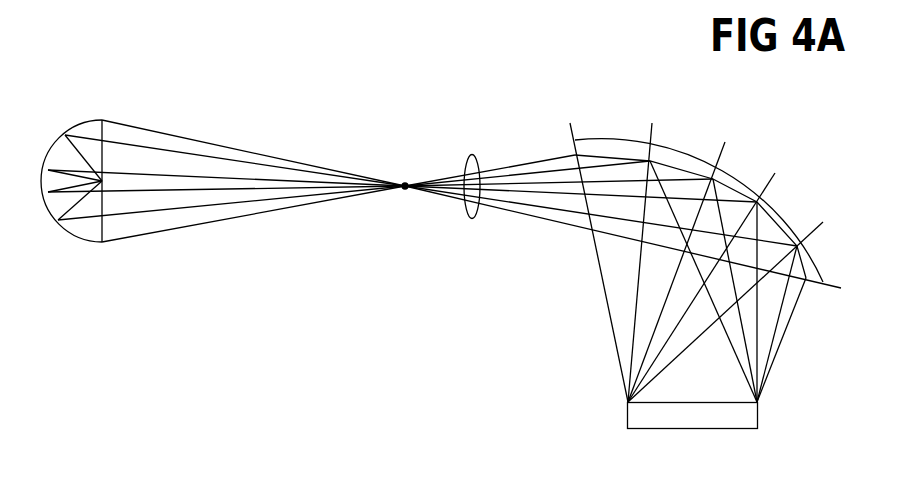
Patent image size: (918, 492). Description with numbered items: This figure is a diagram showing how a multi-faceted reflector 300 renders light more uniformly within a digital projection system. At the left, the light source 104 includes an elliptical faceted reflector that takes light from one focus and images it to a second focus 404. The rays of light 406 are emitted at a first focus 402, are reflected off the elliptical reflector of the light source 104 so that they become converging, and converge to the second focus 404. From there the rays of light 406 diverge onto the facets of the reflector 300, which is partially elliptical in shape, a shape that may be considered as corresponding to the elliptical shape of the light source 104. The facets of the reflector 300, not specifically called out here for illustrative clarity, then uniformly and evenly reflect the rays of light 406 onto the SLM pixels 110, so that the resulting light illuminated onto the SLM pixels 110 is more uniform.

The light source 104 is at (53, 223).
The first focus 402 is at (110, 176).
The second focus 404 is at (403, 189).
The rays of light 406 is at (475, 219).
The reflector 300 is at (800, 235).
The SLM pixels 110 is at (627, 417).